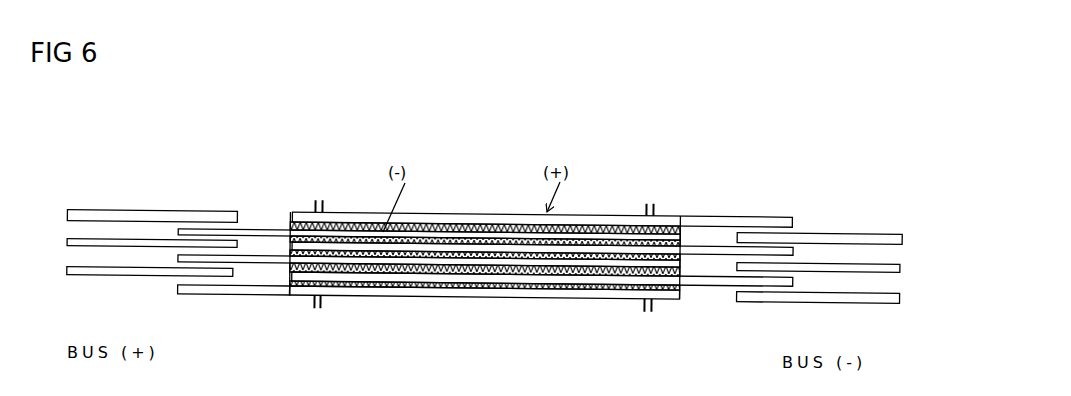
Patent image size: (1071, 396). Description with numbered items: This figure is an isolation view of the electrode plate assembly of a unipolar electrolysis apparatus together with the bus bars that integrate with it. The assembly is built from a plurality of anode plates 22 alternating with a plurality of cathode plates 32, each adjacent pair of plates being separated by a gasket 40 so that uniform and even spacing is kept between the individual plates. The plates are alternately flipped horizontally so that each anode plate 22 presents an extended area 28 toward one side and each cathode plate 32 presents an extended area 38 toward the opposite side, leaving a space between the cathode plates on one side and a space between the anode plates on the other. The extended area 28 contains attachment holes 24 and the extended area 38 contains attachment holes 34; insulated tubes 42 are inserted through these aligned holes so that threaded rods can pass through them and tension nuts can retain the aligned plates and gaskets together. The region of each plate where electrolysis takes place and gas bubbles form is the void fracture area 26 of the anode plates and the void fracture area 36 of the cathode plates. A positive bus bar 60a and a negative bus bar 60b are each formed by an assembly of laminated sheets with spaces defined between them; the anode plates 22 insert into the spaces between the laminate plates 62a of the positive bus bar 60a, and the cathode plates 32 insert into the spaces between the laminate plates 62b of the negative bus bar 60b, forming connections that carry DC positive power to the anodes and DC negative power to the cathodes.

The anode plate 22 is at (578, 299).
The attachment holes 24 is at (310, 294).
The void fracture area 26 is at (472, 299).
The extended area 28 is at (230, 294).
The cathode plate 32 is at (422, 212).
The attachment holes 34 is at (325, 212).
The void fracture area 36 is at (588, 214).
The extended area 38 is at (739, 217).
The gasket 40 is at (493, 227).
The insulated tubes 42 is at (321, 309).
The positive bus bar 60a is at (84, 199).
The negative bus bar 60b is at (882, 244).
The laminate plate 62a is at (137, 211).
The laminate plate 62b is at (773, 301).